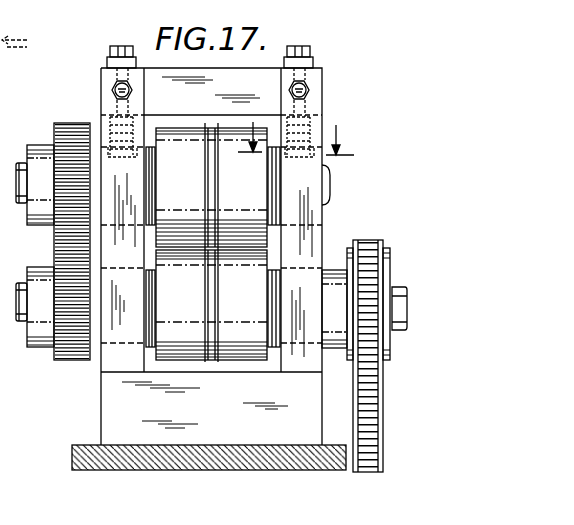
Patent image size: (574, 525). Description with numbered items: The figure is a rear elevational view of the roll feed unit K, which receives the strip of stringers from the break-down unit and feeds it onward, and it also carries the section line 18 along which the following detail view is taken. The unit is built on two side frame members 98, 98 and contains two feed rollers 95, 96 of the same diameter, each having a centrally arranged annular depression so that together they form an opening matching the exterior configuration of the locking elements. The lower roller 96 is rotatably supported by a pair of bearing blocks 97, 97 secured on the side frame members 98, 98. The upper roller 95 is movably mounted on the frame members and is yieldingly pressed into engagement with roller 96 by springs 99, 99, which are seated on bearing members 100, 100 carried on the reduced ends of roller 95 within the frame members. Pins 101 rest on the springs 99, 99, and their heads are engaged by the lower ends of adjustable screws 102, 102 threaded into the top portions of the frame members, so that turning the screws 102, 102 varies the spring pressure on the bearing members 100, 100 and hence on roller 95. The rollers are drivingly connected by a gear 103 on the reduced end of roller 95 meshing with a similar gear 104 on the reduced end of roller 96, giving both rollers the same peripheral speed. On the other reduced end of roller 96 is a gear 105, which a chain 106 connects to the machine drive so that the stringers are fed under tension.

The roll feed unit K is at (337, 60).
The section line 18— 18 is at (295, 138).
The feed roller 95 is at (211, 185).
The feed roller 96 is at (211, 305).
The bearing blocks 97 is at (110, 335).
The side frame members 98 is at (107, 363).
The springs 99 is at (113, 127).
The bearing members 100 is at (108, 200).
The pins 101 is at (133, 112).
The adjustable screws 102 is at (120, 78).
The gear 103 is at (58, 130).
The gear 104 is at (63, 353).
The gear 105 is at (381, 240).
The chain 106 is at (382, 417).